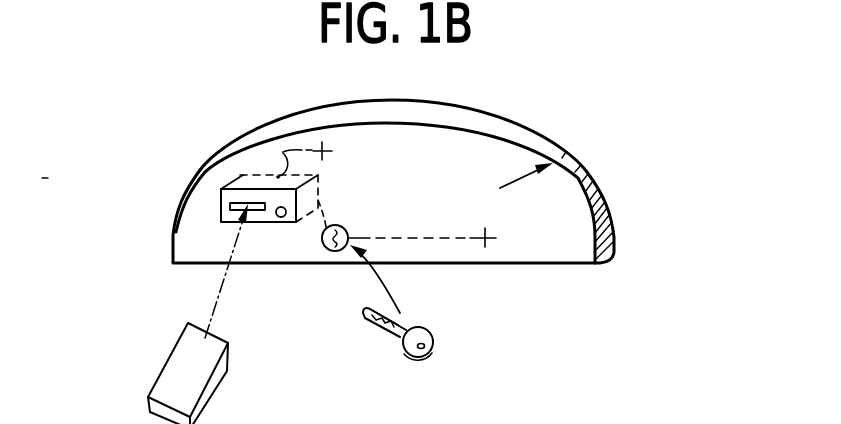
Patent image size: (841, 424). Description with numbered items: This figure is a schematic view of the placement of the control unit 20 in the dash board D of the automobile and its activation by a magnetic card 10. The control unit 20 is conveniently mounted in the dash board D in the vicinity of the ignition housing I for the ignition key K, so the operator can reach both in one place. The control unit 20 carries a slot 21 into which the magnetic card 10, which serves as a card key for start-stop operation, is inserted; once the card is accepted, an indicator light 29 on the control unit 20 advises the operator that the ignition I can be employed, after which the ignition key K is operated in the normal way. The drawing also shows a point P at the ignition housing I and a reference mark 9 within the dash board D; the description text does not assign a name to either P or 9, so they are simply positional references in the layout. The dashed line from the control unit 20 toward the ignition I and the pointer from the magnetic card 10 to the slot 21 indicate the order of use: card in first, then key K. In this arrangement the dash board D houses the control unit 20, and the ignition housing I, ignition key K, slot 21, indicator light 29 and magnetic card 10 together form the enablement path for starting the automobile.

The dash board D is at (572, 153).
The reference axis crosshair 9 is at (283, 152).
The control unit 20 is at (240, 174).
The slot 21 is at (222, 214).
The indicator light 29 is at (283, 222).
The magnetic card 10 is at (177, 352).
The lock cylinder P is at (330, 226).
The ignition housing I is at (346, 229).
The ignition key K is at (435, 330).